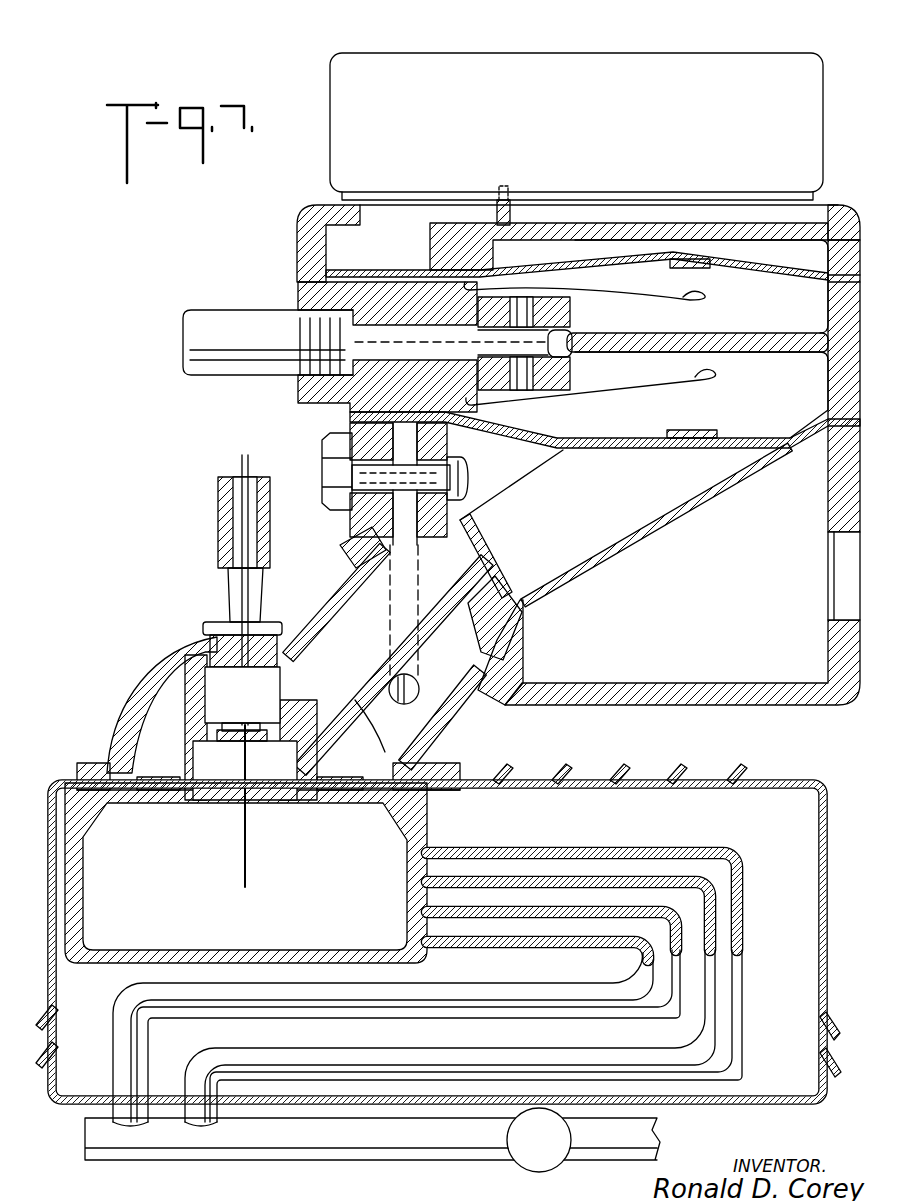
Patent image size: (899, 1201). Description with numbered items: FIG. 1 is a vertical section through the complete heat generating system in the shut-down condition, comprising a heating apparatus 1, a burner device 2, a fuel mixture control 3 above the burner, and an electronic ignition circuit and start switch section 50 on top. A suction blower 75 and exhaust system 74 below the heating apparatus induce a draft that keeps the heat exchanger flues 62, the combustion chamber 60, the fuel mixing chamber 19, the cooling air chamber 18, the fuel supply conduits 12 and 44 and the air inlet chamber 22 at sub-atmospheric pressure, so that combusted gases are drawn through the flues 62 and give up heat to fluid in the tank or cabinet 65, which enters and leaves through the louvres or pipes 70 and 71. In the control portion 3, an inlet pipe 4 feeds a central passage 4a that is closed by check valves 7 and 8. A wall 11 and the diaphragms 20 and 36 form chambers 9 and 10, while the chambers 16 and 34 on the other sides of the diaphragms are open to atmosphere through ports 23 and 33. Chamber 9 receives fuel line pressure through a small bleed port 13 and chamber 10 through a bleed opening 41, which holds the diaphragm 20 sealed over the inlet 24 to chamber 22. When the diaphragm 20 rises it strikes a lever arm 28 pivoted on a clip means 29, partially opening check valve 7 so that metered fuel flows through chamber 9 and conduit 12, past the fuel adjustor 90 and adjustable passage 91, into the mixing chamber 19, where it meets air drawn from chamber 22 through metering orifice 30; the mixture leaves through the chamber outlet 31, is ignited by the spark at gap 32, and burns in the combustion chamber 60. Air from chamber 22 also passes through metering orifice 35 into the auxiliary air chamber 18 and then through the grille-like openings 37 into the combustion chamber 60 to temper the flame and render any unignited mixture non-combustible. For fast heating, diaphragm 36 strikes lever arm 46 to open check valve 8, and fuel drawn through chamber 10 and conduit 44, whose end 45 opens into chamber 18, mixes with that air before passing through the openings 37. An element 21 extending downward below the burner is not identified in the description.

The heating apparatus 1 is at (792, 775).
The burner device 2 is at (135, 668).
The fuel mixture control 3 is at (280, 219).
The inlet pipe 4 is at (221, 318).
The passage 4a is at (350, 403).
The check valve 7 is at (532, 367).
The check valve 8 is at (550, 313).
The chamber 9 is at (780, 404).
The chamber 10 is at (775, 306).
The wall 11 is at (697, 330).
The fuel supply conduit 12 is at (400, 517).
The bleed port 13 is at (560, 348).
The chamber 16 is at (710, 624).
The cooling air chamber 18 is at (160, 707).
The fuel mixing chamber 19 is at (340, 671).
The diaphragm 20 is at (803, 448).
The needle electrode 21 is at (240, 868).
The air inlet chamber 22 is at (628, 504).
The port 23 is at (838, 585).
The inlet 24 is at (716, 455).
The lever arm 28 is at (605, 395).
The clip means 29 is at (512, 394).
The metering orifice 30 is at (463, 540).
The chamber outlet 31 is at (260, 730).
The spark gap 32 is at (207, 732).
The port 33 is at (820, 237).
The chamber 34 is at (520, 253).
The metering orifice 35 is at (490, 584).
The diaphragm 36 is at (826, 262).
The grille-like openings 37 is at (157, 790).
The bleed opening 41 is at (553, 330).
The fuel supply conduit 44 is at (388, 613).
The conduit end 45 is at (437, 677).
The lever arm 46 is at (667, 300).
The electronic ignition circuit and start switch section 50 is at (583, 70).
The combustion chamber 60 is at (315, 909).
The heat exchanger flues 62 is at (680, 928).
The tank or cabinet 65 is at (800, 974).
The louvres or pipes 70 is at (838, 1036).
The louvres or pipes 71 is at (612, 770).
The exhaust system 74 is at (660, 1140).
The suction blower 75 is at (527, 1152).
The fuel adjustor 90 is at (313, 471).
The fuel adjustable passage 91 is at (387, 475).